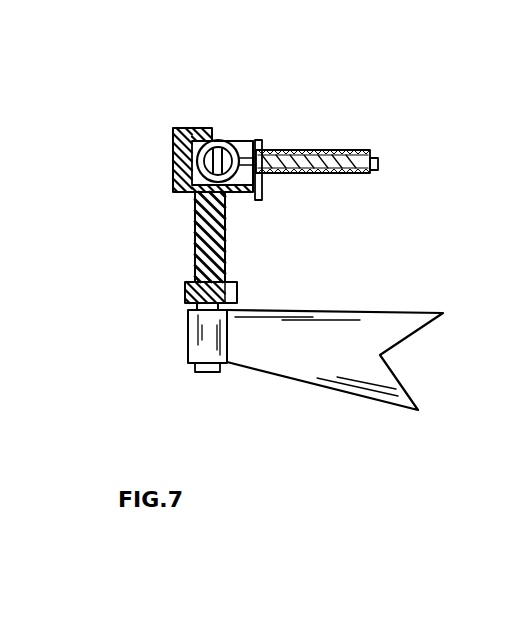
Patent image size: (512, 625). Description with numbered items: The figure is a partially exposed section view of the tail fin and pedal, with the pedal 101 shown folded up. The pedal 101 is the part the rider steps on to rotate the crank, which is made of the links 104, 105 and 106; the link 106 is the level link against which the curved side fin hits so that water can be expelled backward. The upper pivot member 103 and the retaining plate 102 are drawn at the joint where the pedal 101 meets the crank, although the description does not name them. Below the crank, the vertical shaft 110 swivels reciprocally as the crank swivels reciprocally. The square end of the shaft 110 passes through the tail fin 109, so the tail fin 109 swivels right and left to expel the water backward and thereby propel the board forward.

The pedal 101 is at (336, 150).
The retaining plate 102 is at (259, 185).
The pivot bearing 103 is at (237, 143).
The link 104 is at (172, 150).
The link 105 is at (195, 246).
The level link 106 is at (232, 284).
The tail fin 109 is at (293, 365).
The vertical shaft 110 is at (195, 307).